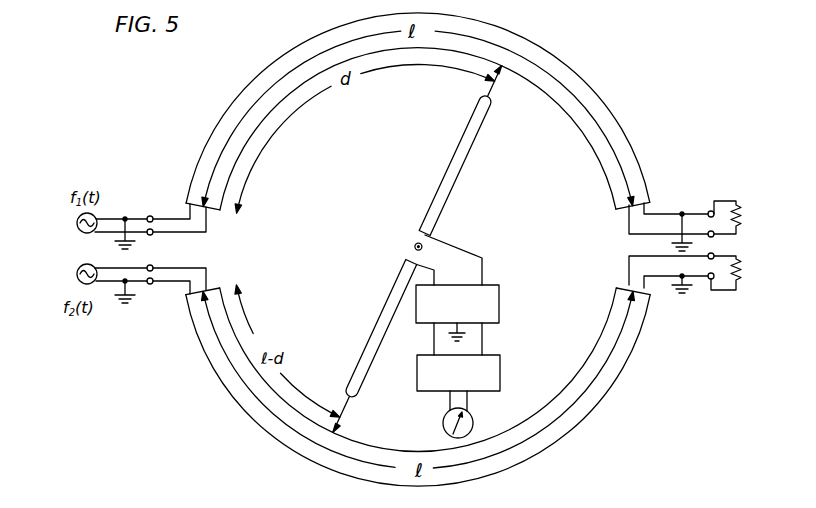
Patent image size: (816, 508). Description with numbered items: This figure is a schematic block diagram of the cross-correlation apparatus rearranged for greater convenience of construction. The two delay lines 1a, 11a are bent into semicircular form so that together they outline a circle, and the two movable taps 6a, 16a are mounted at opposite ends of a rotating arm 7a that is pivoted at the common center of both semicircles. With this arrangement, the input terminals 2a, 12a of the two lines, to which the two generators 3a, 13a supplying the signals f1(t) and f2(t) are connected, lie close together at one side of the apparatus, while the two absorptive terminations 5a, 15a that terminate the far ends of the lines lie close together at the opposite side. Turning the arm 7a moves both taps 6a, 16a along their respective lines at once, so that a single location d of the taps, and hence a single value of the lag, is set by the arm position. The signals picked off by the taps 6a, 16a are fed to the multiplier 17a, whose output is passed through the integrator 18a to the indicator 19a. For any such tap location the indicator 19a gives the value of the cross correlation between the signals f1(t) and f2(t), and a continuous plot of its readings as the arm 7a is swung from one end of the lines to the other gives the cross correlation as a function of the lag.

The delay line 1a is at (237, 101).
The input terminals 2a is at (153, 216).
The generator 3a is at (77, 222).
The absorptive termination 5a is at (745, 214).
The tap 6a is at (504, 71).
The rotating arm 7a is at (441, 183).
The delay line 11a is at (253, 425).
The input terminals 12a is at (152, 284).
The generator 13a is at (77, 273).
The absorptive termination 15a is at (746, 281).
The tap 16a is at (337, 431).
The multiplier 17a is at (499, 303).
The integrator 18a is at (500, 371).
The indicator 19a is at (473, 417).